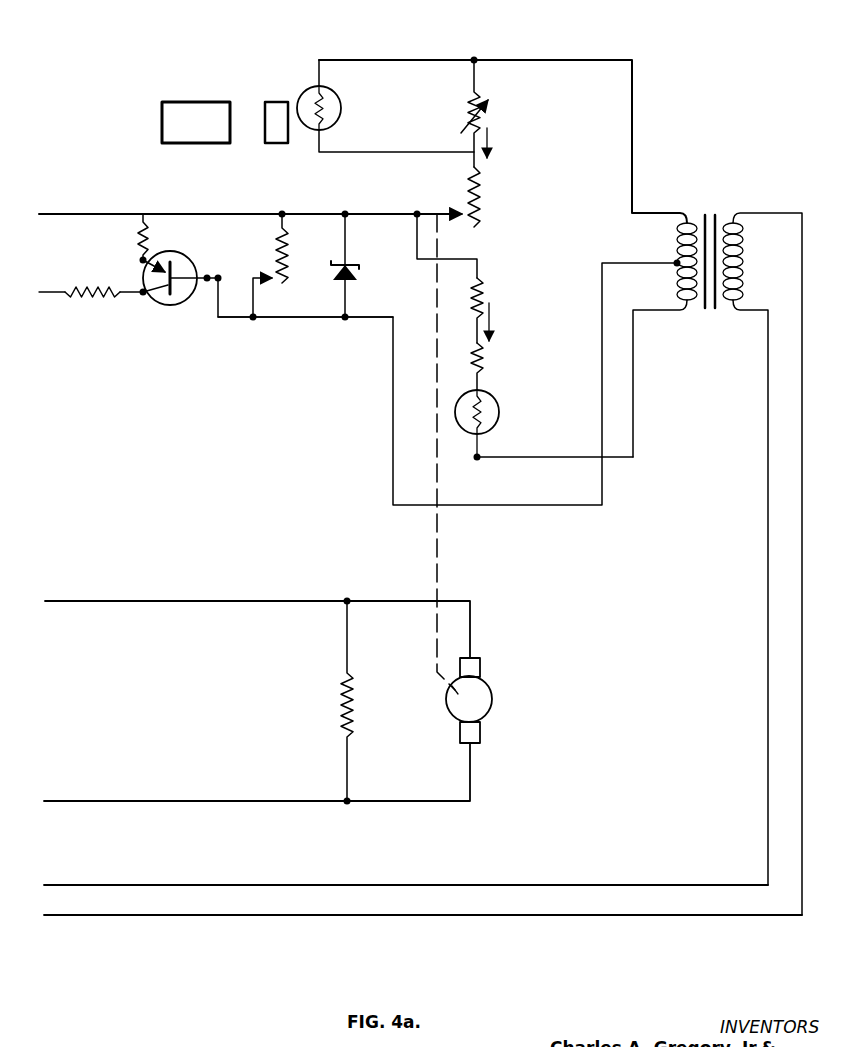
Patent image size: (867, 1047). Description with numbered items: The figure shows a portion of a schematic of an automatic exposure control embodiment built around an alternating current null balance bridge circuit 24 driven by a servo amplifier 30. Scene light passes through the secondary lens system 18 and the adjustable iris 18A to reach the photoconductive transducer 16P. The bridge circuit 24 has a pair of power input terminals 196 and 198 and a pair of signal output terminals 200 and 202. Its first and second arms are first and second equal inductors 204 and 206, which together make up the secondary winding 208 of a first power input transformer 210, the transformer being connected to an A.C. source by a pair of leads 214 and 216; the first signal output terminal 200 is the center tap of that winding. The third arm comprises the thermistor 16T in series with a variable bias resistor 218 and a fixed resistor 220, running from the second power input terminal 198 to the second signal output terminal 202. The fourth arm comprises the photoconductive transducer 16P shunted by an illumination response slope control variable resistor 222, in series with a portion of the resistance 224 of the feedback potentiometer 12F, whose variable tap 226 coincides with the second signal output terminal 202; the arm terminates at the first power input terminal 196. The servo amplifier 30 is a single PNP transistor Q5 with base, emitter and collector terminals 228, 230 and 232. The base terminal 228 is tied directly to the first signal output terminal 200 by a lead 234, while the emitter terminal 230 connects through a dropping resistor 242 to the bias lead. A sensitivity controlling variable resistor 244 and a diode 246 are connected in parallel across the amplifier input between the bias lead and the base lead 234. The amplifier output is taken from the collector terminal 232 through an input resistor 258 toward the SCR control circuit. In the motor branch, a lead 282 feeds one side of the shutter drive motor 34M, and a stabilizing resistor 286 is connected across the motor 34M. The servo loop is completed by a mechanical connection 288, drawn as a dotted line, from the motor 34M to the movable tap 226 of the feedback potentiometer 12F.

The secondary lens system 18 is at (158, 124).
The adjustable iris 18A is at (280, 100).
The photoconductive transducer 16P is at (334, 92).
The first power input terminal 196 is at (477, 58).
The illumination response slope control variable resistor 222 is at (489, 92).
The resistance of the feedback potentiometer 224 is at (482, 180).
The feedback potentiometer 12F is at (484, 214).
The variable tap 226 is at (460, 217).
The second signal output terminal 202 is at (431, 186).
The servo amplifier 30 is at (207, 200).
The bridge circuit 24 is at (528, 256).
The secondary winding 208 is at (650, 211).
The first inductor 204 is at (679, 236).
The first signal output terminal 200 is at (676, 264).
The second inductor 206 is at (679, 290).
The first power input transformer 210 is at (781, 265).
The fixed resistor 220 is at (481, 280).
The variable bias resistor 218 is at (486, 360).
The thermistor 16T is at (502, 411).
The second power input terminal 198 is at (482, 456).
The dropping resistor 242 is at (150, 242).
The emitter terminal 230 is at (141, 257).
The input resistor 258 is at (104, 289).
The collector terminal 232 is at (146, 296).
The PNP transistor Q5 is at (190, 308).
The base terminal 228 is at (219, 270).
The sensitivity controlling variable resistor 244 is at (287, 265).
The diode 246 is at (350, 270).
The lead 234 is at (318, 320).
The lead 282 is at (246, 600).
The stabilizing resistor 286 is at (351, 677).
The mechanical connection 288 is at (443, 645).
The shutter drive motor 34M is at (496, 693).
The lead 214 is at (543, 884).
The lead 216 is at (542, 917).